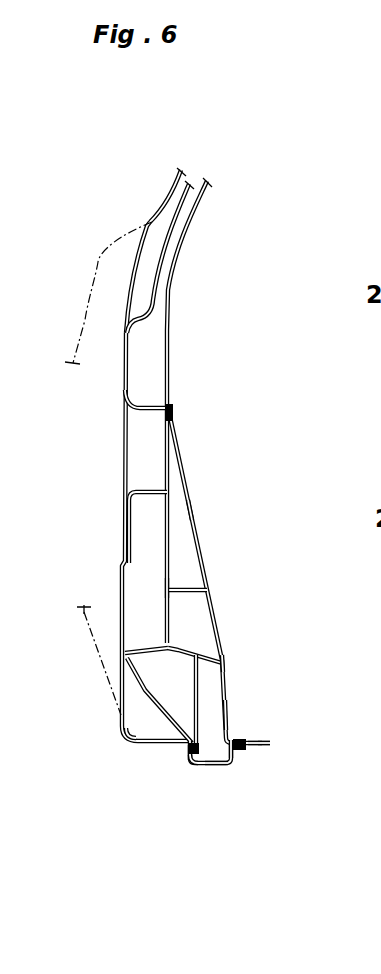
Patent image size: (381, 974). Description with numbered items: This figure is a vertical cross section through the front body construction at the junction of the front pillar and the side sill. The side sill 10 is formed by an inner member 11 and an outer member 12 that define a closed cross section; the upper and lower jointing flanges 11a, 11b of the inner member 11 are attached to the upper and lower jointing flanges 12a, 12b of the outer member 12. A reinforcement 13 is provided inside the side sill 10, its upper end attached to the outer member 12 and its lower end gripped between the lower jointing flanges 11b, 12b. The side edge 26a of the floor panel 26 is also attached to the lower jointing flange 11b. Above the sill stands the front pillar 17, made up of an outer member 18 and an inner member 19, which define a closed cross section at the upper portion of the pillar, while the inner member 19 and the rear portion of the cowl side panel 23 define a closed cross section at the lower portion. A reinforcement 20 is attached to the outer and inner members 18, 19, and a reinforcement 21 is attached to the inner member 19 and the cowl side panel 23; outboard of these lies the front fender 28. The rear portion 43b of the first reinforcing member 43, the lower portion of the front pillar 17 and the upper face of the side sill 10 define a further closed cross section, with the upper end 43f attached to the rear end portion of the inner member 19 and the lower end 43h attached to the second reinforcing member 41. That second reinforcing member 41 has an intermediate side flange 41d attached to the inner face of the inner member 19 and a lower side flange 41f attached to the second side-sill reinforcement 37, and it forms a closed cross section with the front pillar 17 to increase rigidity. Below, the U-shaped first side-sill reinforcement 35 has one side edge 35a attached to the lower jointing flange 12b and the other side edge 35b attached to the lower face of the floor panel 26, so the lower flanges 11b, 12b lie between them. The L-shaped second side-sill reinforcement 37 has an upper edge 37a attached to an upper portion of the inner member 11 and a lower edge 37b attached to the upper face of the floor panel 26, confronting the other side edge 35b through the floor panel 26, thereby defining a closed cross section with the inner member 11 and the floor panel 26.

The side sill 10 is at (123, 715).
The inner member 11 is at (233, 719).
The upper jointing flange 11a is at (178, 652).
The lower jointing flange 11b is at (194, 766).
The outer member 12 is at (129, 733).
The upper jointing flange 12a is at (172, 646).
The lower jointing flange 12b is at (187, 760).
The reinforcement 13 is at (170, 722).
The front pillar 17 is at (148, 210).
The outer member 18 is at (177, 183).
The inner member 19 is at (168, 340).
The reinforcement 20 is at (152, 297).
The reinforcement 21 is at (148, 486).
The cowl side panel 23 is at (121, 445).
The floor panel 26 is at (261, 750).
The side edge 26a is at (225, 766).
The front fender 28 is at (90, 293).
The first side-sill reinforcement 35 is at (232, 768).
The side edge 35a is at (182, 756).
The other side edge 35b is at (250, 762).
The second side-sill reinforcement 37 is at (242, 742).
The upper edge 37a is at (229, 657).
The lower edge 37b is at (265, 750).
The second reinforcing member 41 is at (229, 668).
The intermediate side flange 41d is at (178, 585).
The lower side flange 41f is at (232, 692).
The first reinforcing member 43 is at (192, 474).
The rear portion 43b is at (196, 509).
The upper end 43f is at (172, 406).
The lower end 43h is at (205, 598).